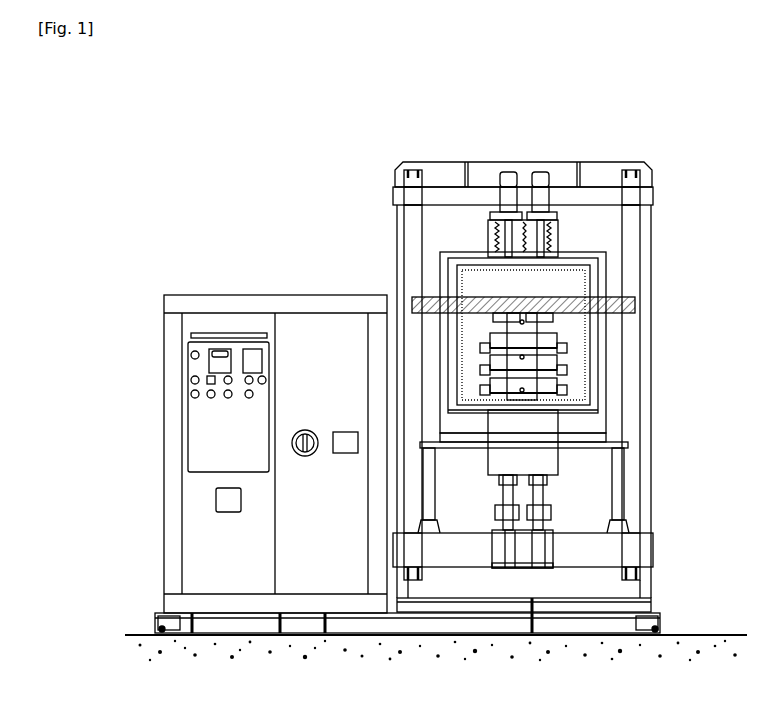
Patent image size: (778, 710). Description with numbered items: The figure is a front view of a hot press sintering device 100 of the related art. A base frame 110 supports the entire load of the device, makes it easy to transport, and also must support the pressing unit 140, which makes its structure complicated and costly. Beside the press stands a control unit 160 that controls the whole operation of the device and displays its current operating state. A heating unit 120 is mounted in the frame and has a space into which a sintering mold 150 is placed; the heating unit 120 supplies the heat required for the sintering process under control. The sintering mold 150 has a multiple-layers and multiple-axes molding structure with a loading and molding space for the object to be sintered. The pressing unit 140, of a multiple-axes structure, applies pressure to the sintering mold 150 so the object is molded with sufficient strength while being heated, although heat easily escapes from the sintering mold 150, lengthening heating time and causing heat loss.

The hot press sintering device 100 is at (262, 145).
The base frame 110 is at (655, 165).
The heating unit 120 is at (612, 361).
The pressing unit 140 is at (555, 483).
The sintering mold 150 is at (570, 378).
The control unit 160 is at (215, 285).